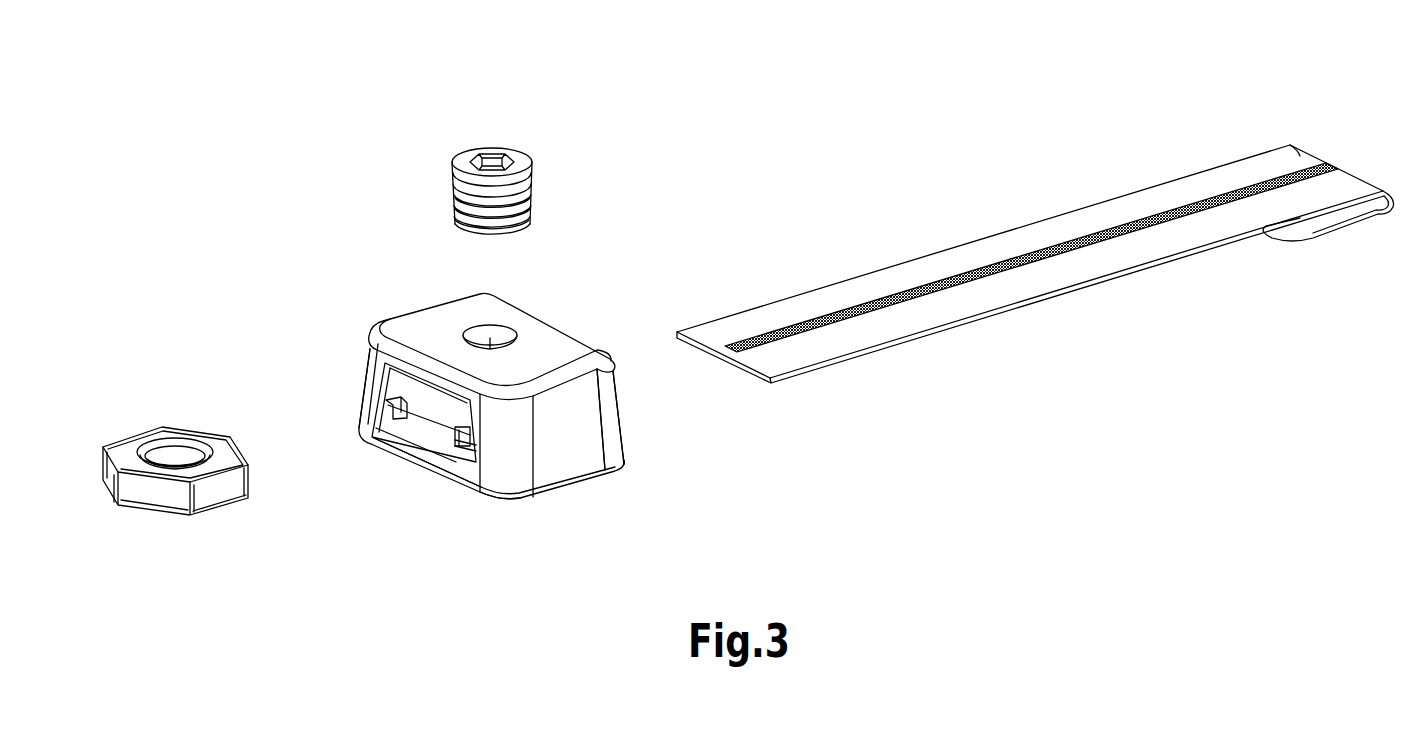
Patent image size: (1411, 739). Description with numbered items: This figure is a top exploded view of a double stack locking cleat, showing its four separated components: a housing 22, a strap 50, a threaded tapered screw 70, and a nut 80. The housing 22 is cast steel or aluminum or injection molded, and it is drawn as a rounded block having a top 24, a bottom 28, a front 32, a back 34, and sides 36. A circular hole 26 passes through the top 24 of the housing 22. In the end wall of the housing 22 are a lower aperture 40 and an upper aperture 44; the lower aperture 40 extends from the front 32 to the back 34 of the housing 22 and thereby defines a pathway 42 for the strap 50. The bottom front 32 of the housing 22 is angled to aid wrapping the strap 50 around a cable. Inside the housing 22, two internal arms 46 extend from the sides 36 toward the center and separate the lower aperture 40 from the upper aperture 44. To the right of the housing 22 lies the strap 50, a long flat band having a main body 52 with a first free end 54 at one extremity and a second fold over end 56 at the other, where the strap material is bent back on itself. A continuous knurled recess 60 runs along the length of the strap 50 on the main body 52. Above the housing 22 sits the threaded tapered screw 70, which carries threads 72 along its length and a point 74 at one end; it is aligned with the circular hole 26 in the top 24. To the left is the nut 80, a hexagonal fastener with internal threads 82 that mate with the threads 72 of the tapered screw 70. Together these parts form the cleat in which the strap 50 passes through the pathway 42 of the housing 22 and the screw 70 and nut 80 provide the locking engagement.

The housing 22 is at (563, 467).
The top 24 is at (555, 345).
The circular hole 26 is at (470, 322).
The bottom 28 is at (505, 502).
The front 32 is at (474, 495).
The back 34 is at (623, 422).
The sides 36 is at (367, 352).
The lower aperture 40 is at (452, 443).
The pathway 42 is at (417, 427).
The upper aperture 44 is at (390, 380).
The internal arms 46 is at (393, 407).
The strap 50 is at (980, 237).
The main body 52 is at (1078, 222).
The first free end 54 is at (793, 352).
The second fold over end 56 is at (1340, 228).
The continuous knurled recess 60 is at (1180, 207).
The threaded tapered screw 70 is at (465, 168).
The threads 72 is at (531, 190).
The point 74 is at (488, 230).
The nut 80 is at (121, 447).
The internal threads 82 is at (175, 445).